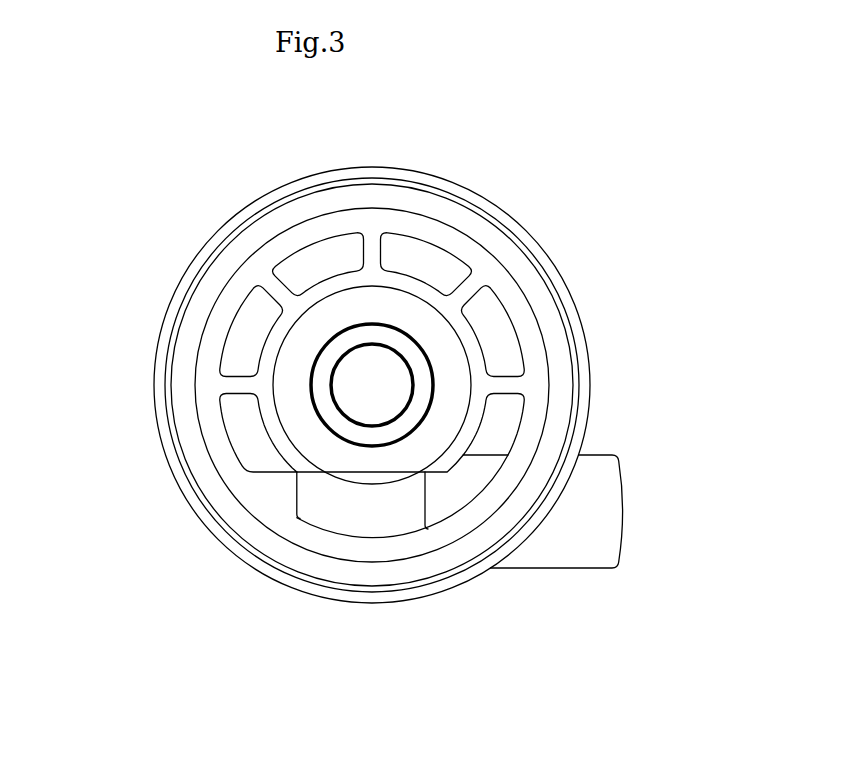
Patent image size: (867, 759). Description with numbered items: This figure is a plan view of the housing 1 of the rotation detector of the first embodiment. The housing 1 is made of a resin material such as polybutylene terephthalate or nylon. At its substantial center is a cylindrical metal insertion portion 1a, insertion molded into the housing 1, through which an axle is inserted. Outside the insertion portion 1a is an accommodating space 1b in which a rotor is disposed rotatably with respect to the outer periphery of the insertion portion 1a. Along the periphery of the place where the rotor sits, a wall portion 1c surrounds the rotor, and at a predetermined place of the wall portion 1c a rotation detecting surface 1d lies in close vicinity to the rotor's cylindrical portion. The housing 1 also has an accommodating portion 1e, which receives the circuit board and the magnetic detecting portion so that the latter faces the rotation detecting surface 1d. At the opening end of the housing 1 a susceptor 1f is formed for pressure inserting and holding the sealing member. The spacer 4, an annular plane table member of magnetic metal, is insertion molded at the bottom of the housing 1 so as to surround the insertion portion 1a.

The housing 1 is at (573, 327).
The insertion portion 1a is at (325, 376).
The accommodating space 1b is at (293, 268).
The wall portion 1c is at (272, 418).
The rotation detecting surface 1d is at (345, 472).
The accommodating portion 1e is at (608, 525).
The susceptor 1f is at (530, 285).
The spacer 4 is at (392, 305).